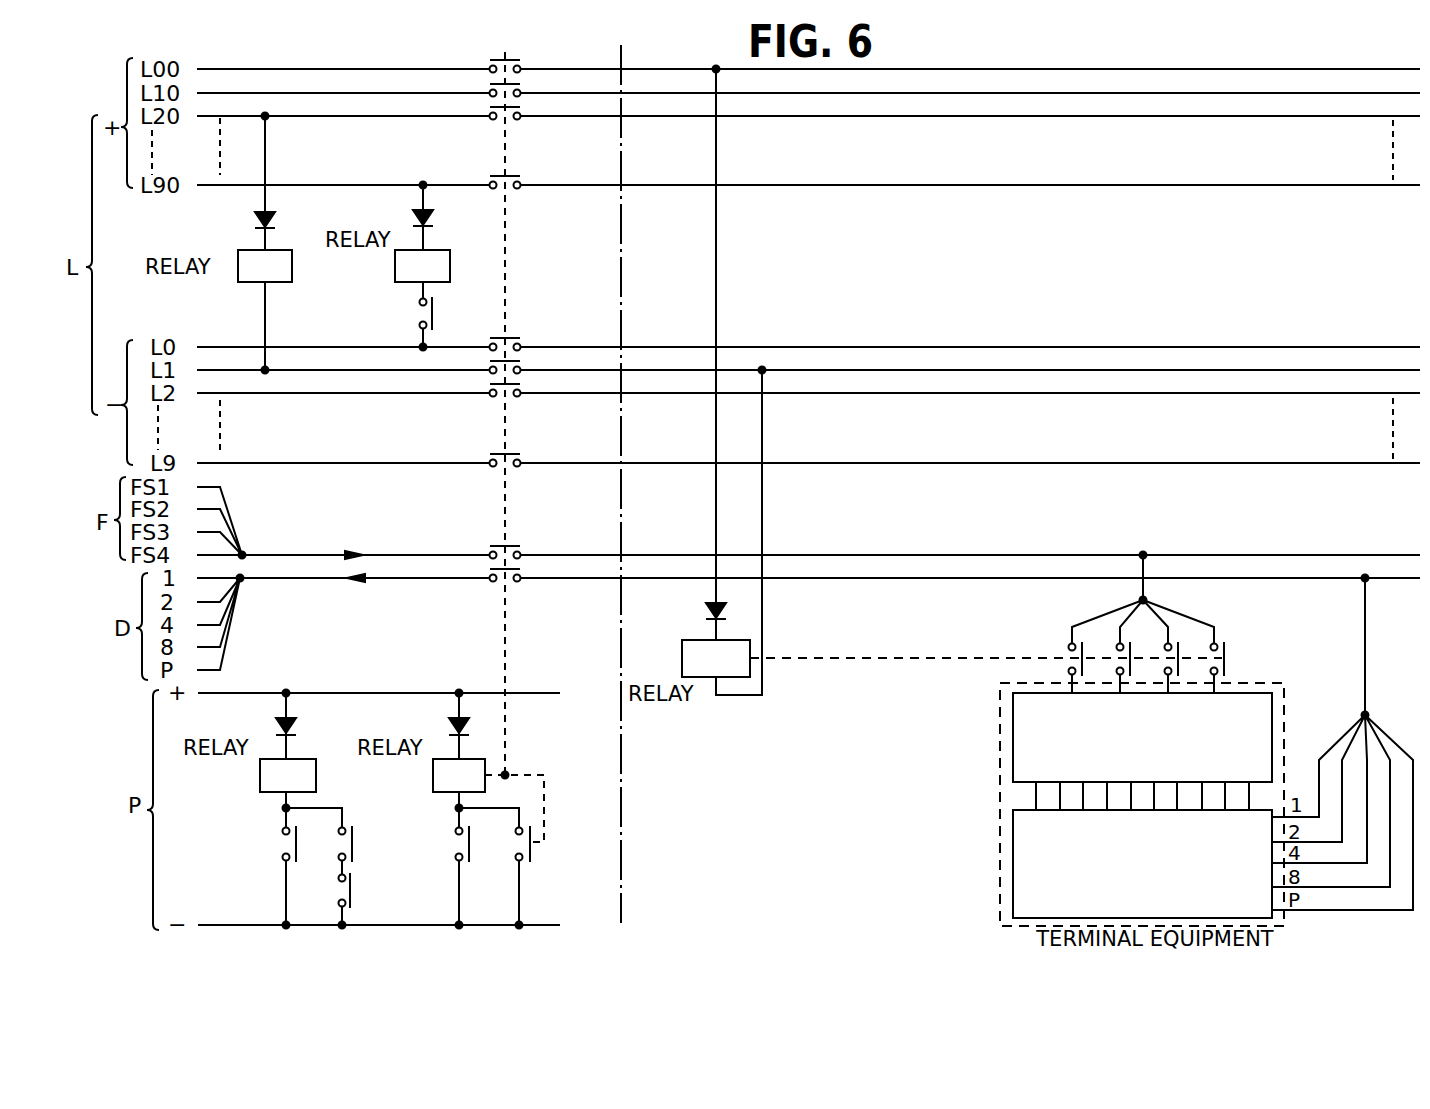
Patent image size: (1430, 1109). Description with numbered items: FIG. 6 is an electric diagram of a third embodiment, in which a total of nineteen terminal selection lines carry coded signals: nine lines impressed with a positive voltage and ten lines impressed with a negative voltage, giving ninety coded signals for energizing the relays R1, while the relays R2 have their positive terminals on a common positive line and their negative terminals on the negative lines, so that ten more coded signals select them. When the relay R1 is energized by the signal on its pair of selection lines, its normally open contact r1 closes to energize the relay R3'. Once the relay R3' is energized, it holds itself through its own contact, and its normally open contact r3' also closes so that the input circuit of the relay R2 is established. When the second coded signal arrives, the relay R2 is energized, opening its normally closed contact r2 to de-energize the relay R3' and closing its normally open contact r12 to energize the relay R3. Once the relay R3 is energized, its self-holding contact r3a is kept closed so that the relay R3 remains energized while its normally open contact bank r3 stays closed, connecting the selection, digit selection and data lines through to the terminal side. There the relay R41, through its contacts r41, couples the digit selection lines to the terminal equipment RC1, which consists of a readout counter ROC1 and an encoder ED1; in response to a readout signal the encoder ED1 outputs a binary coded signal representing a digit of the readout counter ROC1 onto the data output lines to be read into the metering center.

The relay R1 is at (265, 243).
The relay R2 is at (422, 240).
The relay R3 is at (488, 809).
The relay R3' is at (288, 809).
The relay R41 is at (952, 381).
The normally open contact bank r3 is at (518, 408).
The normally open contact r3' is at (443, 324).
The normally open contact r1 is at (303, 844).
The normally closed contact r2 is at (358, 901).
The normally open contact r12 is at (483, 844).
The self-holding contact r3a is at (515, 868).
The contacts r41 is at (1169, 623).
The readout counter ROC1 is at (1013, 722).
The terminal equipment RC1 is at (1000, 782).
The encoder ED1 is at (1013, 880).